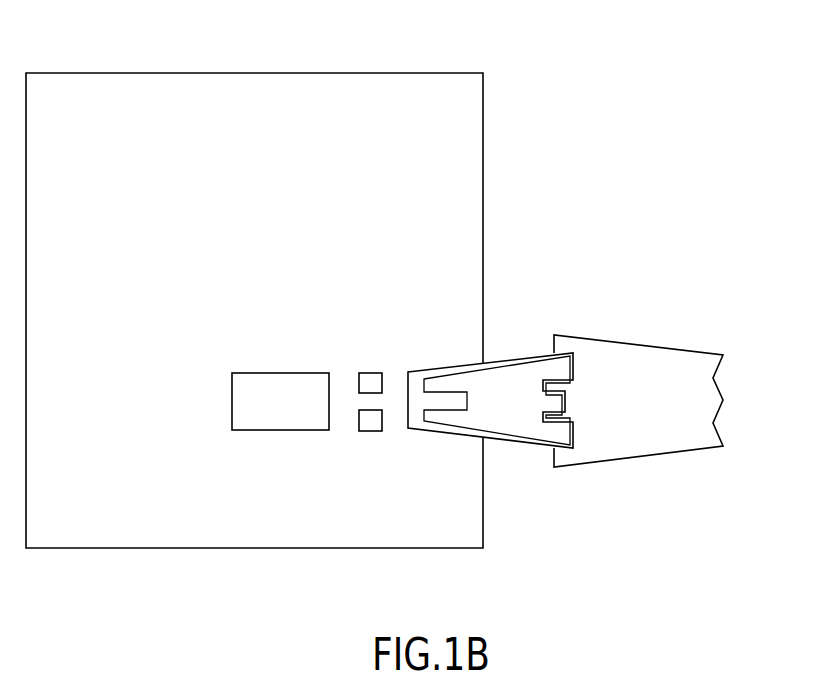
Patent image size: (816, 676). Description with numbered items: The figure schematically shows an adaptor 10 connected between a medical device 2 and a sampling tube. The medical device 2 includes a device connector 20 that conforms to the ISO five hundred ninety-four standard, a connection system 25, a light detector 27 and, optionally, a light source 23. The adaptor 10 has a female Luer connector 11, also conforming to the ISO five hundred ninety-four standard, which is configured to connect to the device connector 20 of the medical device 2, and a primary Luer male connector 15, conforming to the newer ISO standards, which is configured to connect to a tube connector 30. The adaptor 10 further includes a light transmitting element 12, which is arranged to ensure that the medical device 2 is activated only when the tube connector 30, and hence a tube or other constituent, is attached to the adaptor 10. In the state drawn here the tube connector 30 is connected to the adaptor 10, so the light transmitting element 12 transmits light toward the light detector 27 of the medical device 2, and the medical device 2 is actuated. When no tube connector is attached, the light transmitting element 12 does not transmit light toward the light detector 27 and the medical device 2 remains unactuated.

The medical device 2 is at (91, 52).
The adaptor 10 is at (533, 332).
The female Luer connector 11 is at (471, 432).
The light transmitting element 12 is at (417, 432).
The primary Luer male connector 15 is at (561, 452).
The device connector 20 is at (455, 431).
The light source 23 is at (372, 372).
The connection system 25 is at (290, 430).
The light detector 27 is at (369, 431).
The tube connector 30 is at (663, 319).